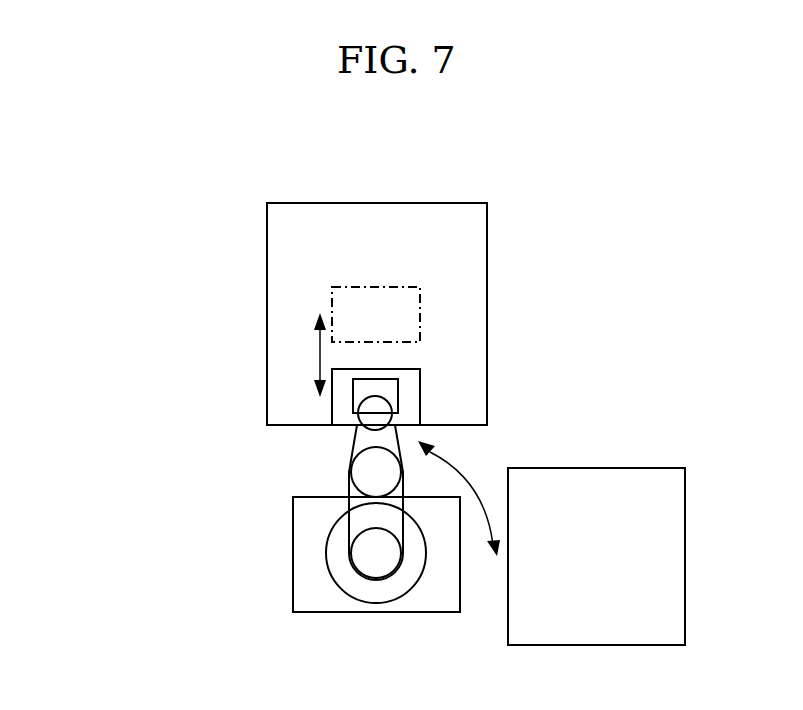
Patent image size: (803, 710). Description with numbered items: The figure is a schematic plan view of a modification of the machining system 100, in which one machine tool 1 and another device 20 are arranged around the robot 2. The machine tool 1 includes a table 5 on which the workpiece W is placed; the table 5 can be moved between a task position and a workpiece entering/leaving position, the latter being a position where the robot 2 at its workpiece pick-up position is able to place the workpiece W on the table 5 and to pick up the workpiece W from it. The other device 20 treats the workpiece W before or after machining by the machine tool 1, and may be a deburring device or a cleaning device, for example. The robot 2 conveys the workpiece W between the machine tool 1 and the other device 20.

The machining system 100 is at (124, 141).
The machine tool 1 is at (370, 203).
The table 5 is at (420, 308).
The workpiece W is at (398, 397).
The robot 2 is at (412, 606).
The other device 20 is at (600, 468).